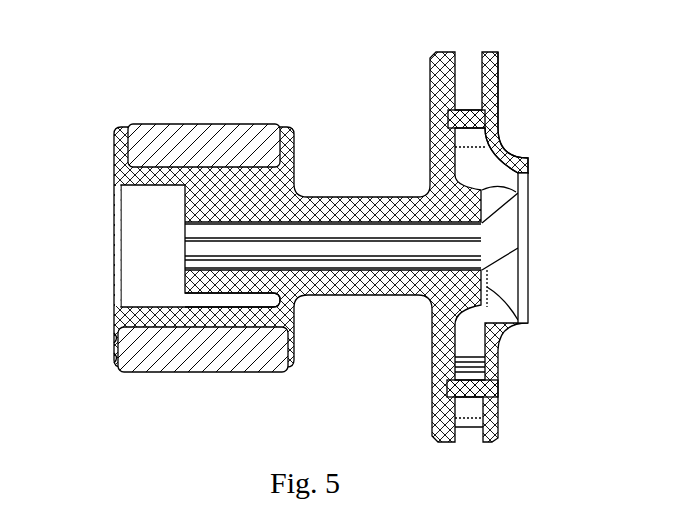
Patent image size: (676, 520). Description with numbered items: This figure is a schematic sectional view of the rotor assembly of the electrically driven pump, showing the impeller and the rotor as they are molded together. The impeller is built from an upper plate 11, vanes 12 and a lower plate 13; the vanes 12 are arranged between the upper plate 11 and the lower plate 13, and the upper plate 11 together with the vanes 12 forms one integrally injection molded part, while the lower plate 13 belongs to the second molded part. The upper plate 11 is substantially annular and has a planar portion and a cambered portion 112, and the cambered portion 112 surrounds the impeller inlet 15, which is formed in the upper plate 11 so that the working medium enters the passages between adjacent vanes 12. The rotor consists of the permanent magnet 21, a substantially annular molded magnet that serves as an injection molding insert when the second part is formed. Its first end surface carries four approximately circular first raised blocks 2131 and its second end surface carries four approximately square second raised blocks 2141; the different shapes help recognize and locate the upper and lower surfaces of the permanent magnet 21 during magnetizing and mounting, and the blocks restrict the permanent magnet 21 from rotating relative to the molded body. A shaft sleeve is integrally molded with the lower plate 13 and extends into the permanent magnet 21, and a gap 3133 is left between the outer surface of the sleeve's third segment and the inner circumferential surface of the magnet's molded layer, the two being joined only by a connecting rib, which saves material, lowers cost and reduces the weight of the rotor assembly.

The upper plate 11 is at (492, 120).
The vanes 12 is at (462, 120).
The lower plate 13 is at (435, 75).
The impeller inlet 15 is at (523, 200).
The permanent magnet 21 is at (205, 143).
The cambered portion 112 is at (567, 139).
The first raised blocks 2131 is at (285, 343).
The second raised blocks 2141 is at (115, 338).
The gap 3133 is at (210, 300).